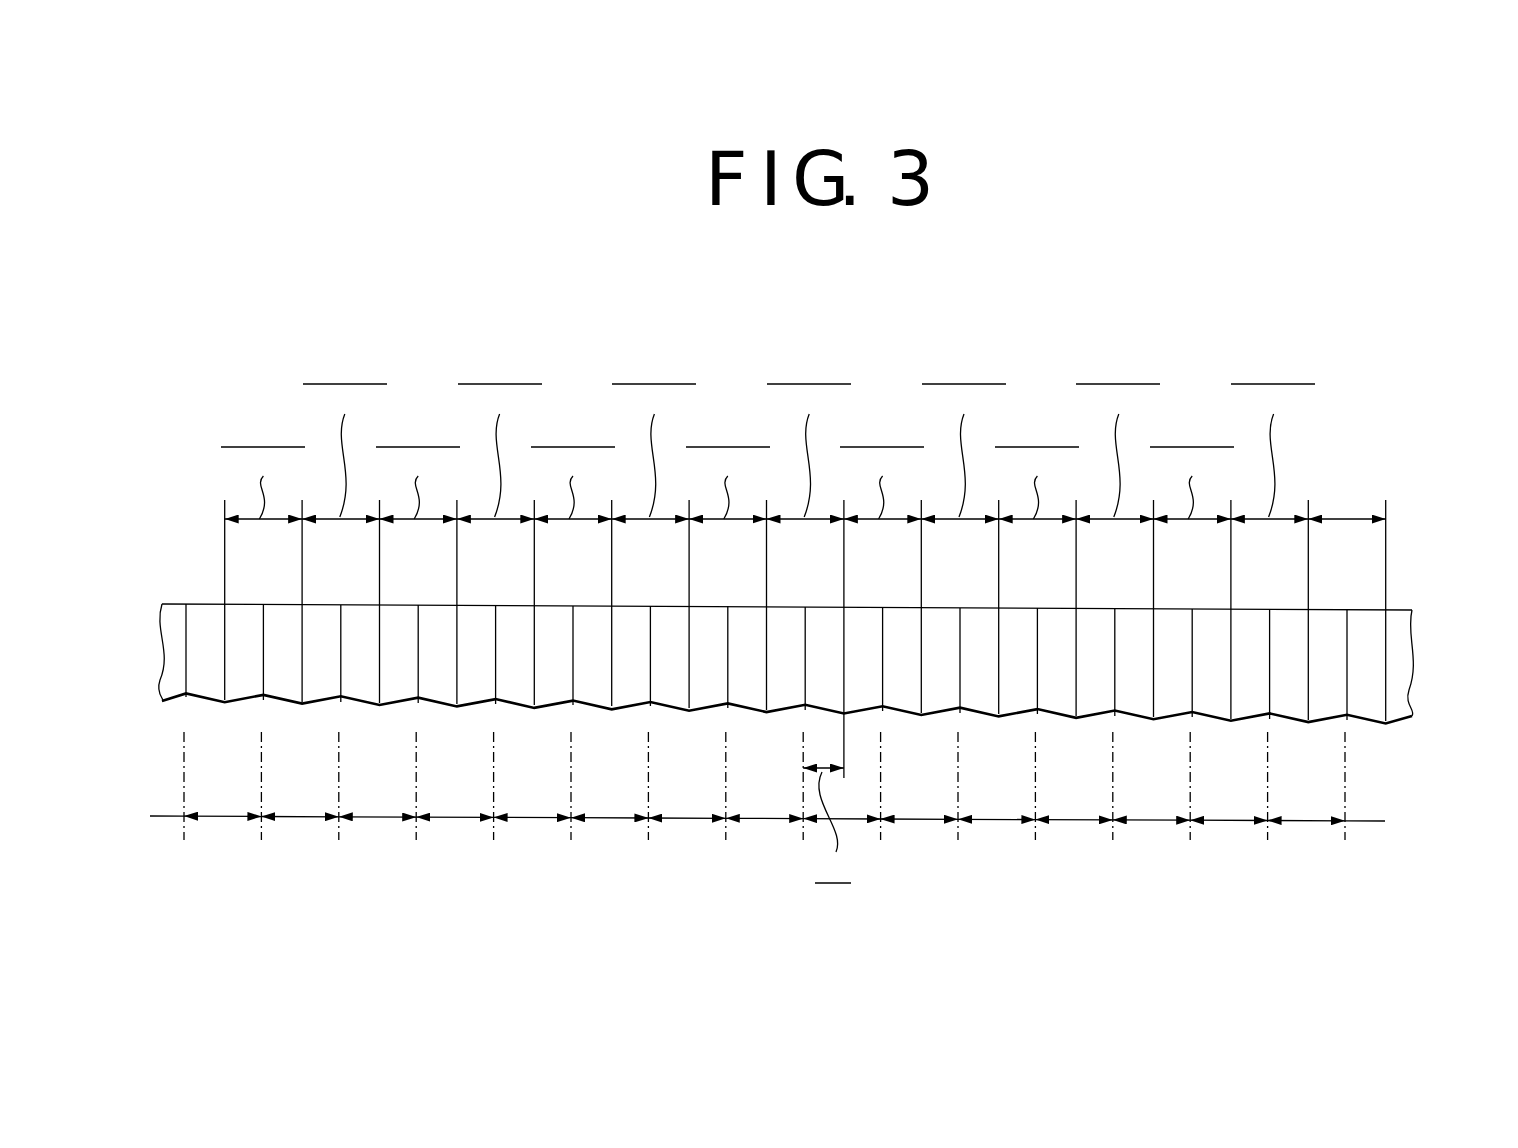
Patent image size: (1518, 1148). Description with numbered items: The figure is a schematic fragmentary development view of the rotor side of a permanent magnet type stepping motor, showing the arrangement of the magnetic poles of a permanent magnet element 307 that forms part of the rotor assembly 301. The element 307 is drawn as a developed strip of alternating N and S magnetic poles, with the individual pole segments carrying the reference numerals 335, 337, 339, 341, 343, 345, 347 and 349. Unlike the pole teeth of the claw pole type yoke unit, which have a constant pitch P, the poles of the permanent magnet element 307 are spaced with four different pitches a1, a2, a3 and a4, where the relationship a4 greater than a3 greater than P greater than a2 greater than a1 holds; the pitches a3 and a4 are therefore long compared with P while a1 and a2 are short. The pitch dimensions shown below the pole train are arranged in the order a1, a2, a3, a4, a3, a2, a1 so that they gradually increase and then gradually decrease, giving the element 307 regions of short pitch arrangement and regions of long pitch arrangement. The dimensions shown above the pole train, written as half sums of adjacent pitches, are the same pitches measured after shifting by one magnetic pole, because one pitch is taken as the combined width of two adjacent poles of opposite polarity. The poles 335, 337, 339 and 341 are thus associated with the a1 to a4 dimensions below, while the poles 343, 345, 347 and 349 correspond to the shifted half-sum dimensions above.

The permanent magnet array 301 is at (1401, 606).
The permanent magnet element 307 is at (1413, 641).
The N-pole magnet of width a1 335 is at (360, 689).
The N-pole magnet of width a2 337 is at (283, 687).
The N-pole magnet of width a3 339 is at (205, 686).
The N-pole magnet of width a4 341 is at (592, 693).
The S-pole magnet of width (a1+a2)/2 343 is at (400, 618).
The S-pole magnet of width (a2+a3)/2 345 is at (323, 618).
The S-pole magnet of width (a3+a4)/2 347 is at (245, 618).
The S-pole magnet of width (a3+a4)/2 349 is at (632, 618).